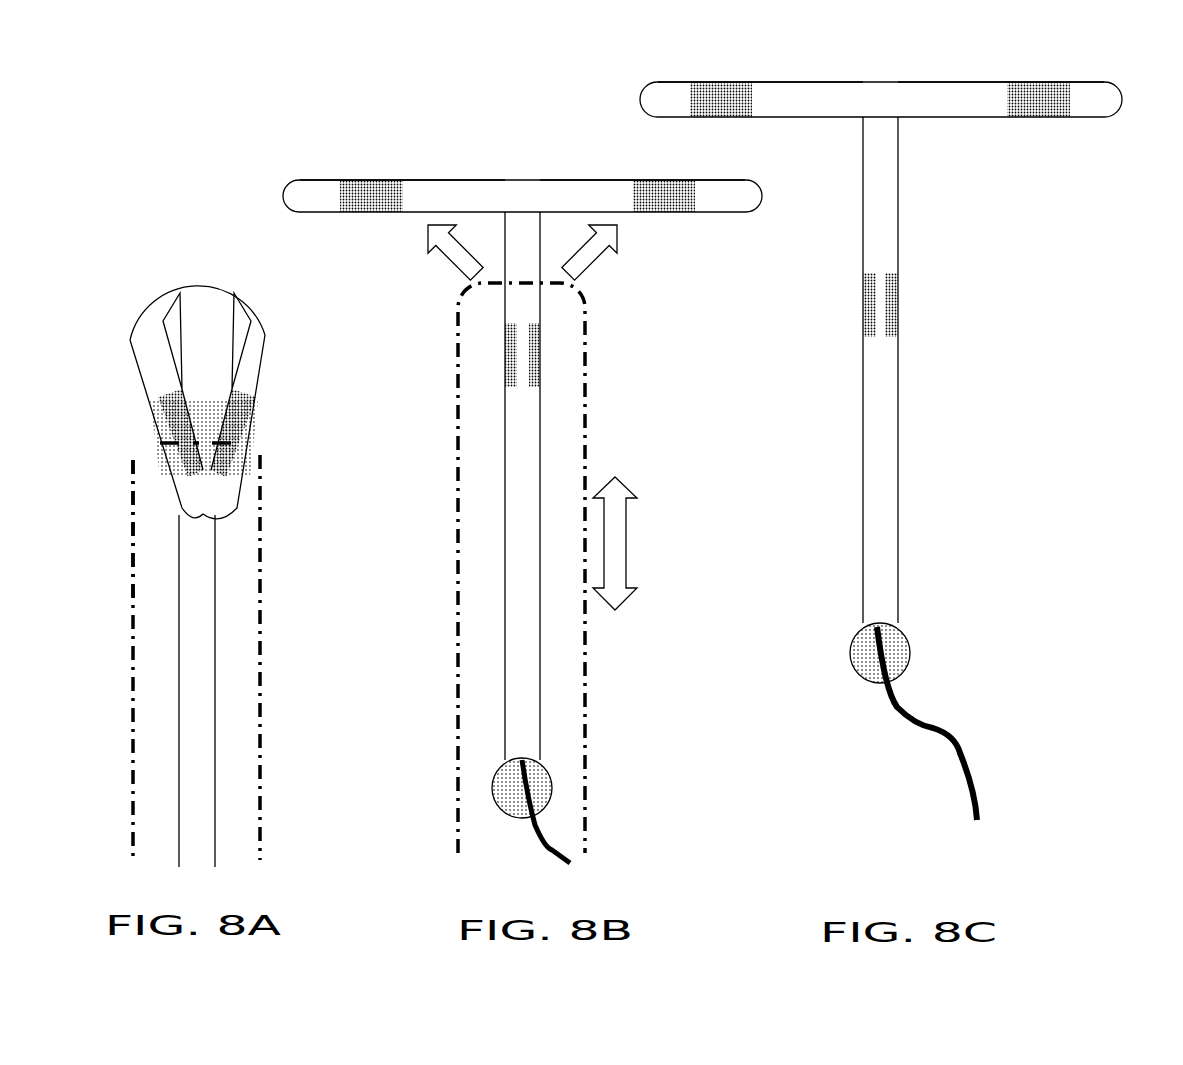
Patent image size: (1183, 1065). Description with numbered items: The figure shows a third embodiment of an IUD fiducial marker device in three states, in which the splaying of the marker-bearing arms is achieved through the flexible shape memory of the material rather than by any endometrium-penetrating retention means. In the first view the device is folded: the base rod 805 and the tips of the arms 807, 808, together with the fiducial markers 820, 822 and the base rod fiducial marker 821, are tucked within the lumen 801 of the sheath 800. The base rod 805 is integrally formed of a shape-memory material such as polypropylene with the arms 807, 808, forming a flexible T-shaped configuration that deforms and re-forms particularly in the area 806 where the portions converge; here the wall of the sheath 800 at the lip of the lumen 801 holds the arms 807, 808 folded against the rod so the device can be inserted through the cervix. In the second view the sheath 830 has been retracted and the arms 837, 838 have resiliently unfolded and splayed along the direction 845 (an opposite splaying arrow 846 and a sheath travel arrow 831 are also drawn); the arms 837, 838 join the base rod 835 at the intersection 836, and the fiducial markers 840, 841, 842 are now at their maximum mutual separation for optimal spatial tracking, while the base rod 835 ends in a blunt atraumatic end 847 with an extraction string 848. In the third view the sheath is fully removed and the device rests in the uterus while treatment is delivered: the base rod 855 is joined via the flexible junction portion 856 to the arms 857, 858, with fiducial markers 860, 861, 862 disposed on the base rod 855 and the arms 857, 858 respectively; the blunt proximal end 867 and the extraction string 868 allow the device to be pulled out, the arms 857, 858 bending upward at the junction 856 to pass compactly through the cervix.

In FIG. 8A, the sheath 800 is at (226, 659).
In FIG. 8A, the lumen 801 is at (148, 460).
In FIG. 8A, the base rod 805 is at (200, 585).
In FIG. 8A, the area 806 is at (197, 283).
In FIG. 8A, the arm 807 is at (248, 335).
In FIG. 8A, the arm 808 is at (143, 330).
In FIG. 8A, the fiducial marker 820 is at (173, 425).
In FIG. 8A, the base rod fiducial marker 821 is at (198, 393).
In FIG. 8A, the fiducial marker 822 is at (233, 413).
In FIG. 8B, the sheath 830 is at (597, 703).
In FIG. 8B, the direction of movement arrow 831 is at (617, 555).
In FIG. 8B, the base rod 835 is at (522, 440).
In FIG. 8B, the intersection 836 is at (527, 200).
In FIG. 8B, the arm 837 is at (402, 162).
In FIG. 8B, the arm 838 is at (642, 162).
In FIG. 8B, the fiducial marker 840 is at (540, 350).
In FIG. 8B, the fiducial marker 841 is at (371, 178).
In FIG. 8B, the fiducial marker 842 is at (664, 178).
In FIG. 8B, the direction 845 is at (585, 258).
In FIG. 8B, the left expansion arrow 846 is at (445, 252).
In FIG. 8B, the blunt atraumatic end 847 is at (537, 787).
In FIG. 8B, the extraction string 848 is at (547, 827).
In FIG. 8C, the base rod 855 is at (885, 378).
In FIG. 8C, the flexible junction portion 856 is at (882, 110).
In FIG. 8C, the arm 857 is at (760, 62).
In FIG. 8C, the arm 858 is at (1001, 62).
In FIG. 8C, the fiducial marker 860 is at (885, 302).
In FIG. 8C, the fiducial marker 861 is at (721, 79).
In FIG. 8C, the fiducial marker 862 is at (1038, 79).
In FIG. 8C, the blunt proximal end 867 is at (897, 652).
In FIG. 8C, the extraction string 868 is at (920, 712).